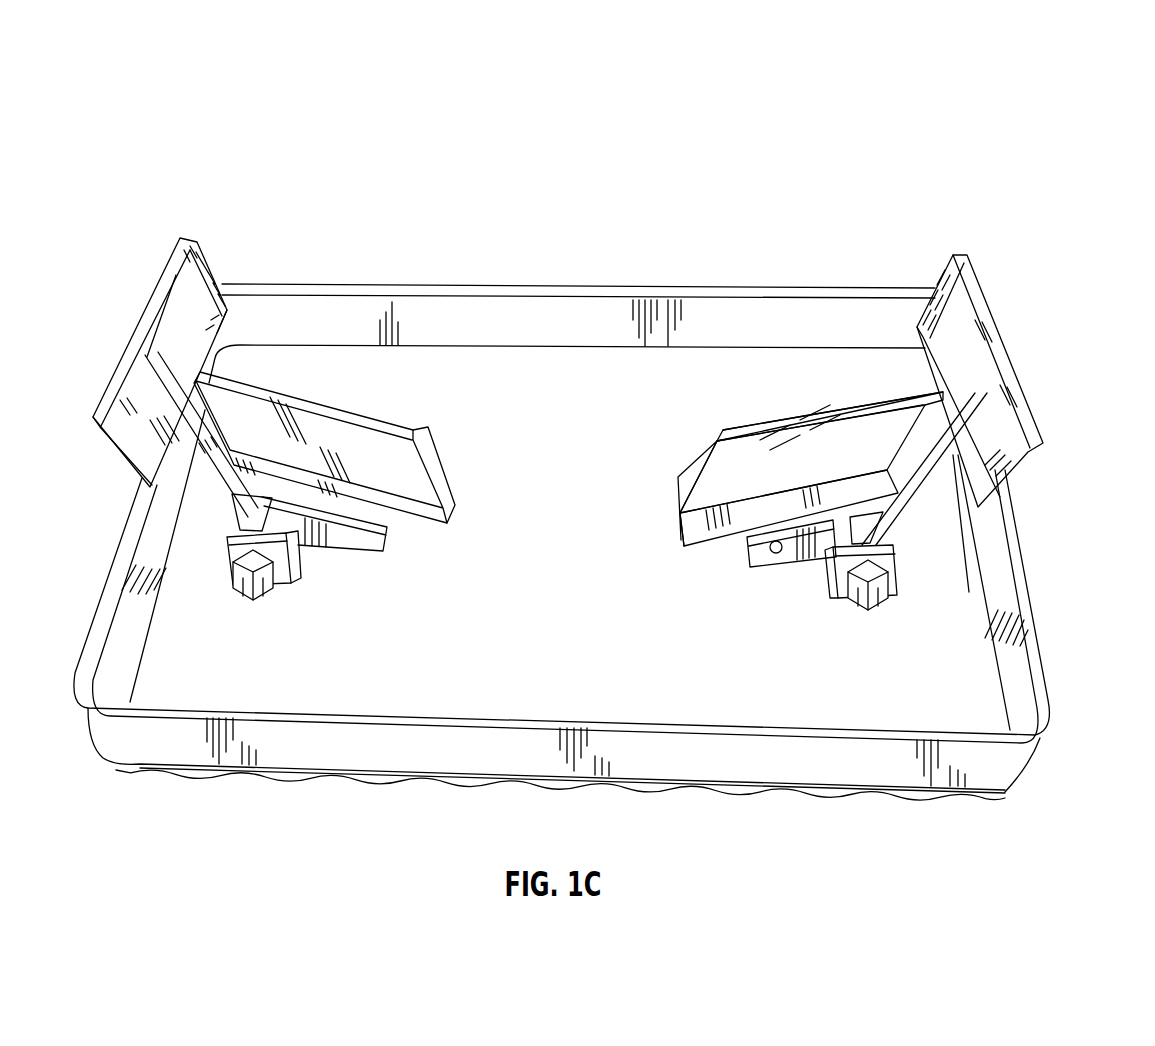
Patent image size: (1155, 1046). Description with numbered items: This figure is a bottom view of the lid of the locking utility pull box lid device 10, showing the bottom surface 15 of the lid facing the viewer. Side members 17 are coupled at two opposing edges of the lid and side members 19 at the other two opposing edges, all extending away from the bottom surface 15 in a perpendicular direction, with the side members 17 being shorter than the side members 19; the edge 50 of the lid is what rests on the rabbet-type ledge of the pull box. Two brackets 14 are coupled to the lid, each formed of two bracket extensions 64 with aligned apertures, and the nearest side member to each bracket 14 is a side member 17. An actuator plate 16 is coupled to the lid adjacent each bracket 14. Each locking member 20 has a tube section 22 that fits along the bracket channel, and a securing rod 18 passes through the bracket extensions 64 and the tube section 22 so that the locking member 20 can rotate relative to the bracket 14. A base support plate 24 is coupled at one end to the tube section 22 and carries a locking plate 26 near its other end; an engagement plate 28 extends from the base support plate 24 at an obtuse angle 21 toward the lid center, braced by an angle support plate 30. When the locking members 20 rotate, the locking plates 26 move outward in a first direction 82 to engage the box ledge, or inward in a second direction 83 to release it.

The locking utility pull box lid device 10 is at (90, 152).
The bracket 14 is at (919, 566).
The bottom surface 15 is at (576, 536).
The actuator plate 16 is at (784, 558).
The side member 17 is at (142, 585).
The securing rod 18 is at (257, 587).
The side member 19 is at (588, 328).
The locking member 20 is at (305, 378).
The angle 21 is at (856, 482).
The tube section 22 is at (258, 523).
The base support plate 24 is at (215, 368).
The locking plate 26 is at (1033, 428).
The engagement plate 28 is at (690, 527).
The angle support plate 30 is at (750, 448).
The edge 50 is at (160, 710).
The bracket extension 64 is at (300, 562).
The first direction 82 is at (240, 268).
The second direction 83 is at (400, 372).